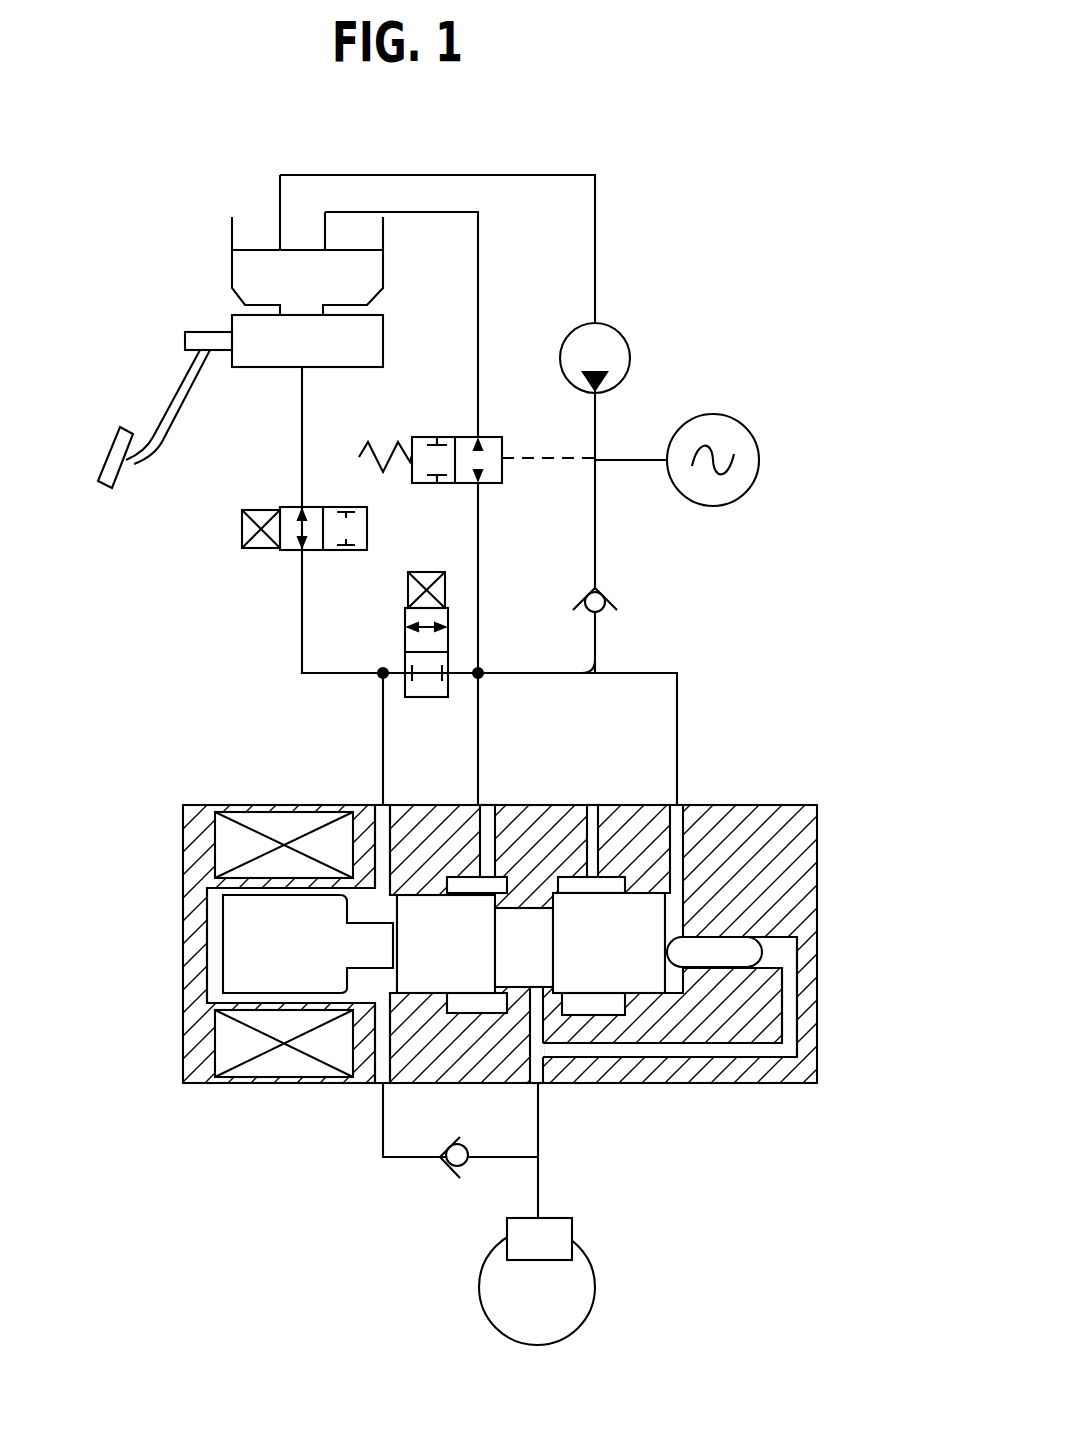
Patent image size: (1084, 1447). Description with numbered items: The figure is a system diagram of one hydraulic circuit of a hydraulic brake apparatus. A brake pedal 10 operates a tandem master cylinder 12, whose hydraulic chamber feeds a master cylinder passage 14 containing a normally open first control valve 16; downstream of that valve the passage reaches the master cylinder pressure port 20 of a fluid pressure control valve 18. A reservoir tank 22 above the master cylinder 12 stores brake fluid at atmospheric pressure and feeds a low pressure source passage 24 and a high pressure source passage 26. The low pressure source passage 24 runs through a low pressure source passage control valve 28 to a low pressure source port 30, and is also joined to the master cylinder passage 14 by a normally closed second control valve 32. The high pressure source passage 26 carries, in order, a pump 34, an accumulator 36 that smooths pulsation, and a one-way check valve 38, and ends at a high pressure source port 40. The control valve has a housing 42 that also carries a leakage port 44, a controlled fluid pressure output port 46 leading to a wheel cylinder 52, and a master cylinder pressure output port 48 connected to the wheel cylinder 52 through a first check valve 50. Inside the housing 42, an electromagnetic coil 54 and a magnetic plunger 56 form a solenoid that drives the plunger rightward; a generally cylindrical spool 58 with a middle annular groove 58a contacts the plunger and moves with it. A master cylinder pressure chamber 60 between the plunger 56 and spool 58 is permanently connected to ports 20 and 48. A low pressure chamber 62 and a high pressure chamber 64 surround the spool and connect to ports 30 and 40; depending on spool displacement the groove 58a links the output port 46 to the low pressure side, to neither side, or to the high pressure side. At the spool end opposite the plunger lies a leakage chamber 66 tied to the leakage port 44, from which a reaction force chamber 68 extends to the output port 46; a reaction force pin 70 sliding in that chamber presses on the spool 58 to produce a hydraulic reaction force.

The brake pedal 10 is at (148, 453).
The master cylinder 12 is at (263, 367).
The master cylinder passage 14 is at (302, 650).
The first control valve 16 is at (255, 548).
The fluid pressure control valve 18 is at (283, 800).
The master cylinder pressure port 20 is at (378, 820).
The reservoir tank 22 is at (252, 275).
The low pressure source passage 24 is at (478, 270).
The high pressure source passage 26 is at (595, 270).
The low pressure source passage control valve 28 is at (435, 437).
The low pressure source port 30 is at (520, 937).
The second control valve 32 is at (405, 633).
The pump 34 is at (630, 358).
The accumulator 36 is at (759, 452).
The check valve 38 is at (605, 596).
The high pressure source port 40 is at (598, 822).
The housing 42 is at (800, 838).
The leakage port 44 is at (693, 823).
The controlled fluid pressure output port 46 is at (545, 1055).
The master cylinder pressure output port 48 is at (383, 1058).
The first check valve 50 is at (455, 1168).
The wheel cylinder 52 is at (555, 1235).
The electromagnetic coil 54 is at (280, 1055).
The plunger 56 is at (268, 942).
The spool 58 is at (633, 923).
The annular groove 58a is at (565, 880).
The master cylinder pressure chamber 60 is at (378, 905).
The low pressure chamber 62 is at (470, 1018).
The high pressure chamber 64 is at (610, 1010).
The leakage chamber 66 is at (677, 977).
The reaction force chamber 68 is at (778, 950).
The reaction force pin 70 is at (780, 985).